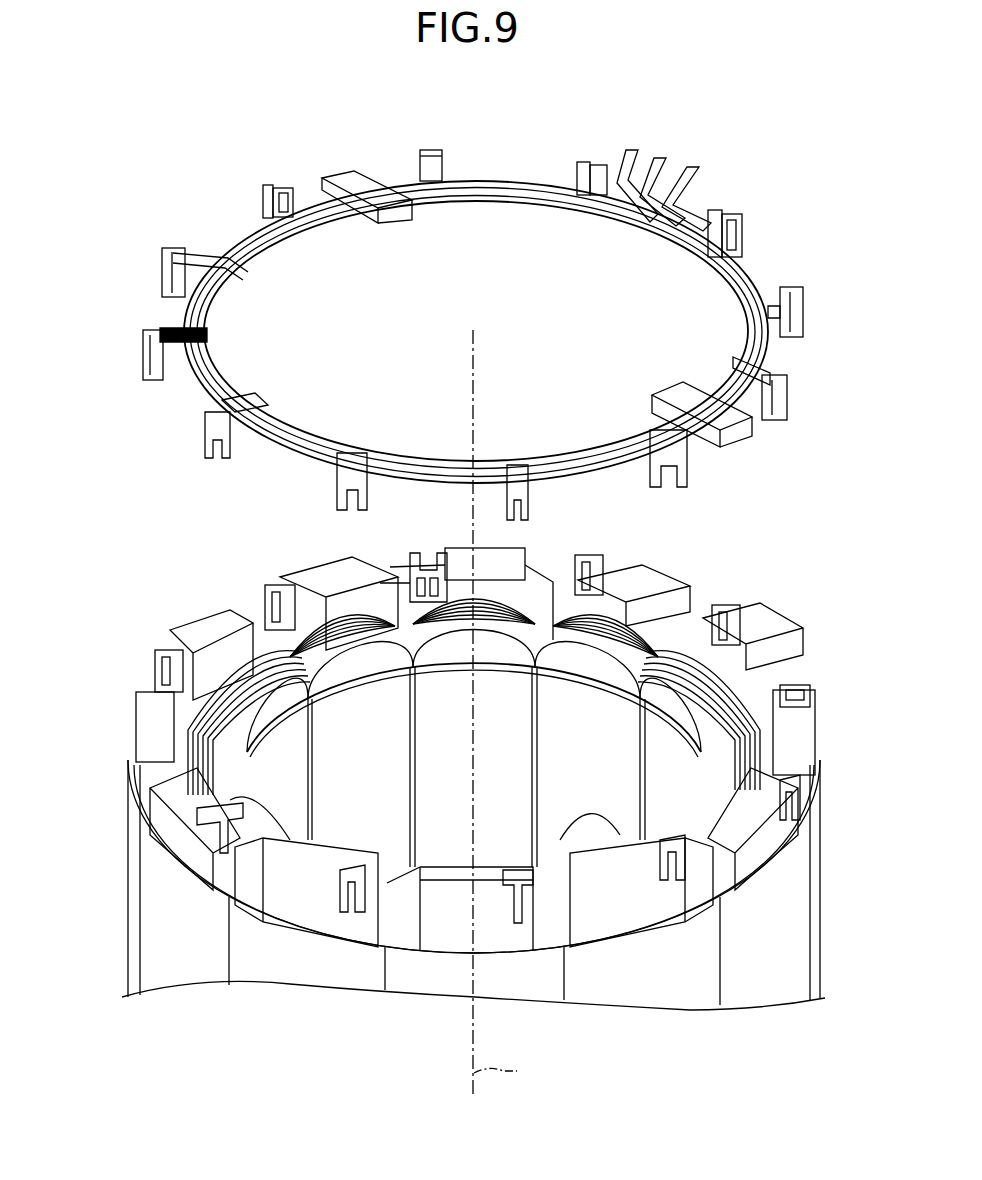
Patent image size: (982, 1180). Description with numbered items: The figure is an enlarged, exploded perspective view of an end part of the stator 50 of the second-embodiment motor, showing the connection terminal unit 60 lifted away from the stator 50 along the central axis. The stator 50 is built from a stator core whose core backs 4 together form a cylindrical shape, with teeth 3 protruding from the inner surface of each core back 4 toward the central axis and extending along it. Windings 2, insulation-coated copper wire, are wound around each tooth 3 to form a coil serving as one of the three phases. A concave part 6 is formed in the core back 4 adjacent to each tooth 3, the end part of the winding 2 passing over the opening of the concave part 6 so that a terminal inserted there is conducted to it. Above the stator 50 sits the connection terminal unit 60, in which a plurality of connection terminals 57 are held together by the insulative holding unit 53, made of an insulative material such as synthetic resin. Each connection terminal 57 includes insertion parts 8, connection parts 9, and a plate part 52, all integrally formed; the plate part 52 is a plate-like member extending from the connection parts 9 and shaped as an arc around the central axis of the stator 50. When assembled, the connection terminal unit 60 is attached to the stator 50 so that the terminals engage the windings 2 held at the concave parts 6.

The windings 2 is at (688, 648).
The teeth 3 is at (603, 755).
The core backs 4 is at (647, 580).
The concave part 6 is at (598, 560).
The insertion parts 8 is at (148, 340).
The connection parts 9 is at (187, 333).
The stator 50 is at (780, 540).
The plate part 52 is at (197, 294).
The insulative holding unit 53 is at (347, 177).
The connection terminals 57 is at (466, 316).
The connection terminal unit 60 is at (790, 170).